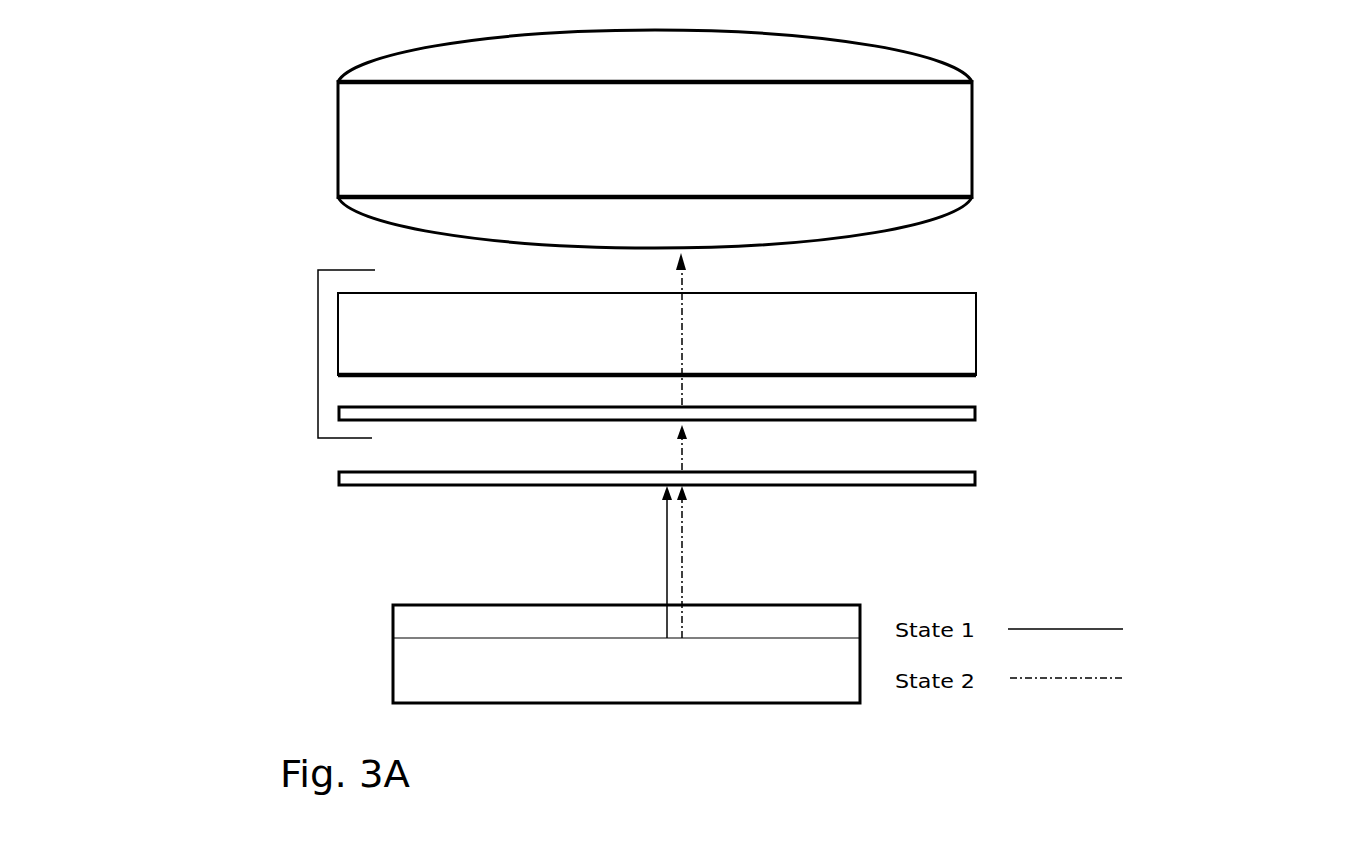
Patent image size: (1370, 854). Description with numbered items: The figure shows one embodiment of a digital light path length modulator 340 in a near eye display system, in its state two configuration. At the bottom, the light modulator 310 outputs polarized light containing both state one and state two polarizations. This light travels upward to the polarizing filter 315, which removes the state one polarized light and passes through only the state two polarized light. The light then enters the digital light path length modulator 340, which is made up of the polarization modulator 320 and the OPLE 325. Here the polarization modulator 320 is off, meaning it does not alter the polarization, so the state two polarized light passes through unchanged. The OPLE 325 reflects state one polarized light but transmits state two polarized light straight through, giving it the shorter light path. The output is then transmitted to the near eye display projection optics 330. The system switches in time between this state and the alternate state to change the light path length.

The light modulator 310 is at (626, 655).
The polarizing filter 315 is at (979, 479).
The polarization modulator 320 is at (979, 414).
The OPLE 325 is at (980, 332).
The near eye display (NED) projection optics 330 is at (681, 139).
The digital light path length modulator 340 is at (731, 354).